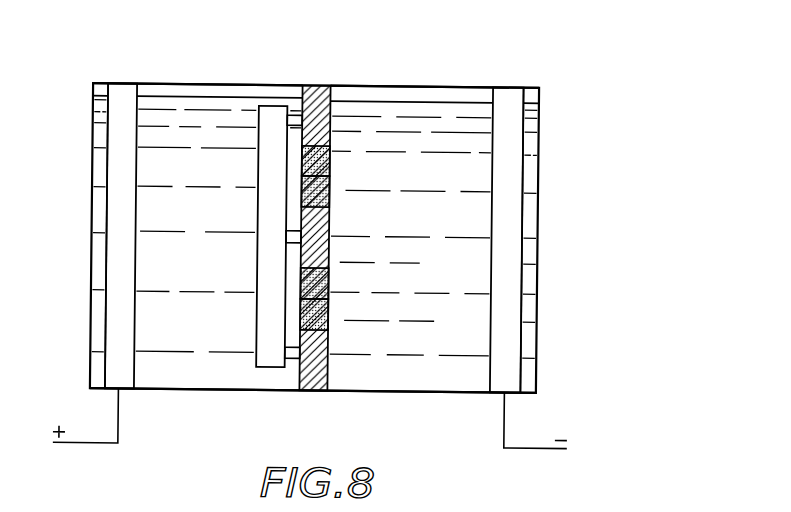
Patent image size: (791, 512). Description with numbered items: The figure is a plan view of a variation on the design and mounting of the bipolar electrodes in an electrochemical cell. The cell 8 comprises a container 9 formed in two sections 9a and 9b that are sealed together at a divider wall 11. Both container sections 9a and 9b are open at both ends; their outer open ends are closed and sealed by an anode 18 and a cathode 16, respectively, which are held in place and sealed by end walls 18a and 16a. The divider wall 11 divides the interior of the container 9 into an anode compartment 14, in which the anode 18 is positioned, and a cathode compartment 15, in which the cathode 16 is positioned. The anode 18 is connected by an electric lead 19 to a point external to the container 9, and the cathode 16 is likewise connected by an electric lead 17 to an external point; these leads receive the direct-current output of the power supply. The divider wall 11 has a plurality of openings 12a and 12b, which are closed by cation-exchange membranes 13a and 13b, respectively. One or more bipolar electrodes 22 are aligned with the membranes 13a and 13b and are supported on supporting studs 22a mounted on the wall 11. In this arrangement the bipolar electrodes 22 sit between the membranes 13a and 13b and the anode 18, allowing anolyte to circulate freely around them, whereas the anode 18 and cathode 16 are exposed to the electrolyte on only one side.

The cell 8 is at (76, 65).
The container 9 is at (375, 391).
The container section 9a is at (206, 85).
The container section 9b is at (386, 85).
The divider wall 11 is at (311, 85).
The opening 12a is at (330, 156).
The opening 12b is at (330, 280).
The cation-exchange membrane 13a is at (330, 197).
The cation-exchange membrane 13b is at (330, 319).
The anode compartment 14 is at (174, 345).
The cathode compartment 15 is at (443, 117).
The cathode 16 is at (500, 254).
The end wall 16a is at (528, 226).
The electric lead 17 is at (520, 446).
The anode 18 is at (123, 212).
The end wall 18a is at (100, 250).
The electric lead 19 is at (100, 445).
The bipolar electrode 22 is at (265, 244).
The supporting stud 22a is at (293, 124).